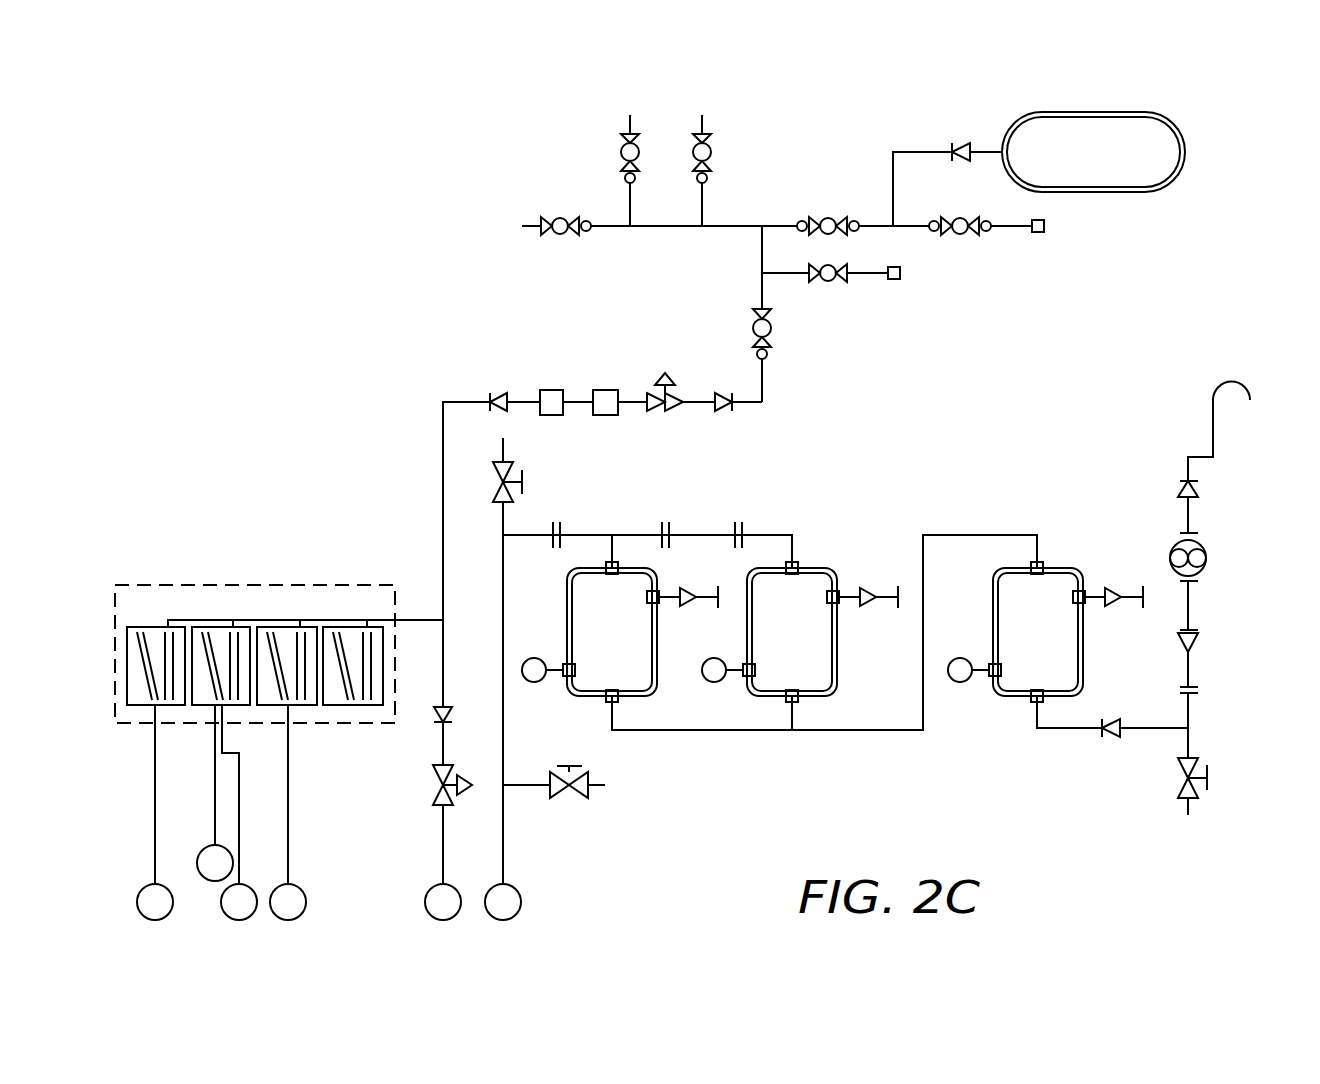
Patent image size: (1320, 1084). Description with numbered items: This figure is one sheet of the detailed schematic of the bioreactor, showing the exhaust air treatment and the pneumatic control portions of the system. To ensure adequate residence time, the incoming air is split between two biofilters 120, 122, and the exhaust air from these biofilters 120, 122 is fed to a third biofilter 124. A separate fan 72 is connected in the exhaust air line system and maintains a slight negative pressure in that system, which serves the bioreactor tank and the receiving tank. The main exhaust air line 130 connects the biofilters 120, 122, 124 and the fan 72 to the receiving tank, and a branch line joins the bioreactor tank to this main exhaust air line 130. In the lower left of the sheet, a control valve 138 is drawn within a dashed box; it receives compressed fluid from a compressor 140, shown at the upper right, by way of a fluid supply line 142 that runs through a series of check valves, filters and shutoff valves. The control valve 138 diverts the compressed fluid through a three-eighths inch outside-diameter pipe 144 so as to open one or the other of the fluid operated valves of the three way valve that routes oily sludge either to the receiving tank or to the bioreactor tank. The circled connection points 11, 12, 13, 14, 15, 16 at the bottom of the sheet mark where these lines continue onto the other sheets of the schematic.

The output port 11 is at (155, 812).
The output port 12 is at (215, 793).
The output port 13 is at (239, 812).
The output port 14 is at (288, 812).
The port 15 is at (448, 813).
The port 16 is at (545, 679).
The fan 72 is at (1170, 552).
The biofilter 120 is at (637, 568).
The biofilter 122 is at (818, 568).
The third biofilter 124 is at (1063, 568).
The main exhaust air line 130 is at (940, 535).
The control valve 138 is at (240, 585).
The compressor 140 is at (1140, 192).
The fluid supply line 142 is at (443, 447).
The pipe 144 is at (215, 812).